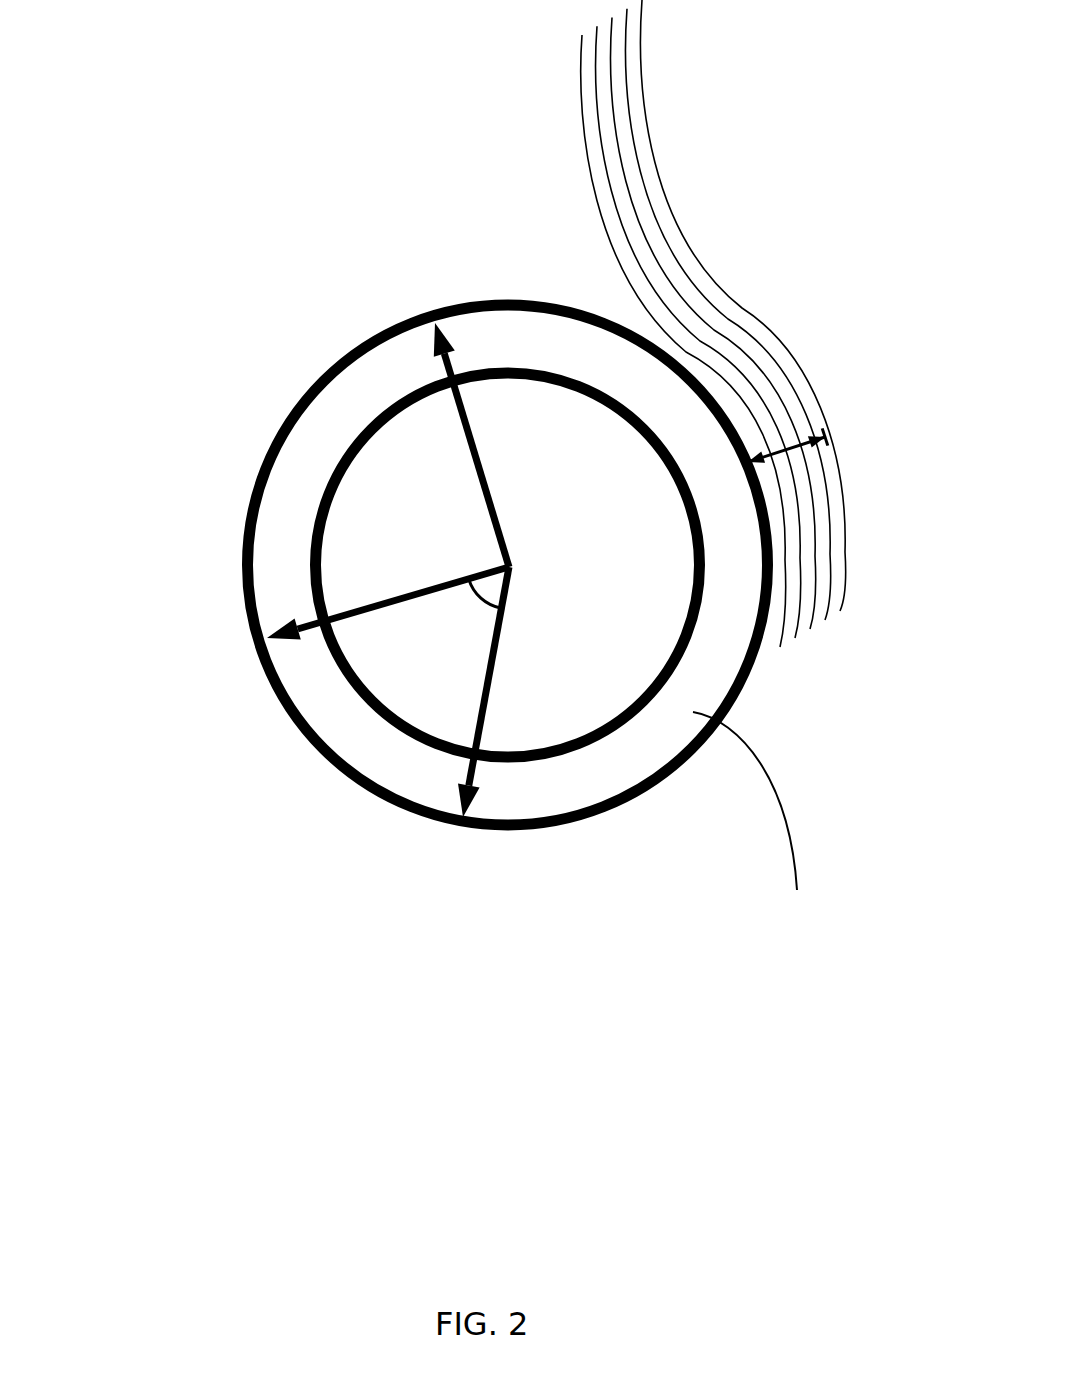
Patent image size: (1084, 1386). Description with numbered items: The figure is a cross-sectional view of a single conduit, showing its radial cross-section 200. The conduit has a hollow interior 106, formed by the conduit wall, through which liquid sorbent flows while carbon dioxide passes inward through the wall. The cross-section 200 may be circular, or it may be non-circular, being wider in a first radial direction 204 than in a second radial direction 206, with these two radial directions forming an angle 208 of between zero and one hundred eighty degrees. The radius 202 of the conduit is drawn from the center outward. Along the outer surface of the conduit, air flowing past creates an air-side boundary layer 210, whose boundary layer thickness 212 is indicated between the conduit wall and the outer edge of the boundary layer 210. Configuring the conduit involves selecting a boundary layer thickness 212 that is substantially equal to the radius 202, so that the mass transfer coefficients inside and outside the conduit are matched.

The radial cross-section 200 is at (168, 139).
The hollow interior 106 is at (597, 500).
The radius 202 is at (477, 445).
The first radial direction 204 is at (362, 605).
The second radial direction 206 is at (488, 717).
The angle 208 is at (487, 604).
The boundary layer 210 is at (800, 340).
The boundary layer thickness 212 is at (827, 436).